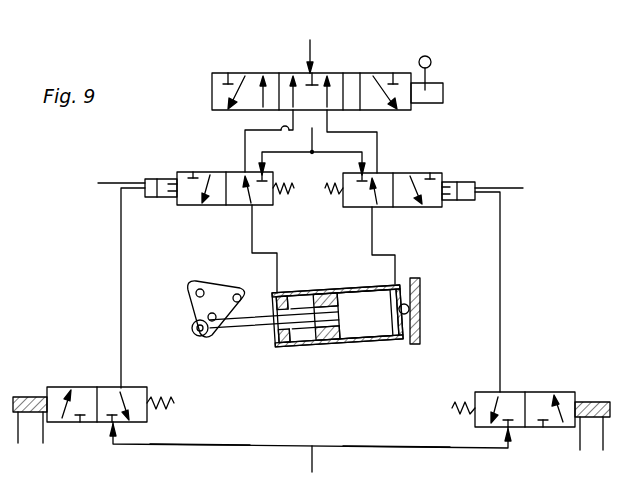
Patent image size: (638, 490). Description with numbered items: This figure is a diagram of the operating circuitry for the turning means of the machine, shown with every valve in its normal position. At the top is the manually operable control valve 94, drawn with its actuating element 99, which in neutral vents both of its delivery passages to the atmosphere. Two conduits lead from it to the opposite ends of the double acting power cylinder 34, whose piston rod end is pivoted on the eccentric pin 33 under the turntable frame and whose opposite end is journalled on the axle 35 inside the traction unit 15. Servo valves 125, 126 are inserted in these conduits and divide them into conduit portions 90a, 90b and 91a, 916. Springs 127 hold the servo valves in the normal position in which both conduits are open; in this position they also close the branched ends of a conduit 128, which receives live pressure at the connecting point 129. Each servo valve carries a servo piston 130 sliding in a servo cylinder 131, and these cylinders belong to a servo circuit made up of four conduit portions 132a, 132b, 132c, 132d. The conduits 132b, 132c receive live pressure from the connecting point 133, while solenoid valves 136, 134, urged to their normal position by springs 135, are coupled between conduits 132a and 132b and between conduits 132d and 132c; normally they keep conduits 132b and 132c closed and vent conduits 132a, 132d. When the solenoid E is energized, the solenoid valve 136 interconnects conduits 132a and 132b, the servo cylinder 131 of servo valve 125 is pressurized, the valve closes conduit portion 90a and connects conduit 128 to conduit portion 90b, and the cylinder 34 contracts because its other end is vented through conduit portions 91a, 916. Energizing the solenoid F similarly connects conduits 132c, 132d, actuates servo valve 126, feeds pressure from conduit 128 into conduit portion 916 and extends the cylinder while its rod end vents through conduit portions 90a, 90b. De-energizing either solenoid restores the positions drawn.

The control valve 94 is at (256, 80).
The actuating member 99 is at (312, 43).
The connecting point 129 is at (312, 137).
The conduit 128 is at (347, 153).
The springs 127 is at (327, 196).
The conduit portion 90a is at (243, 143).
The conduit portion 91a is at (377, 155).
The conduit portion 90b is at (251, 247).
The conduit portion 916 is at (373, 232).
The servo valve 125 is at (190, 197).
The servo valve 126 is at (427, 199).
The servo piston 130 is at (160, 181).
The servo cylinder 131 is at (307, 190).
The conduit portion 132a is at (120, 267).
The conduit portion 132b is at (250, 445).
The conduit portion 132c is at (348, 433).
The conduit portion 132d is at (501, 275).
The connecting point 133 is at (313, 460).
The solenoid valve 134 is at (532, 428).
The springs 135 is at (174, 403).
The solenoid valve 136 is at (67, 416).
The pin 33 is at (203, 337).
The power cylinder 34 is at (357, 338).
The axle 35 is at (408, 306).
The traction unit 15 is at (421, 325).
The solenoid E is at (38, 400).
The solenoid F is at (598, 403).